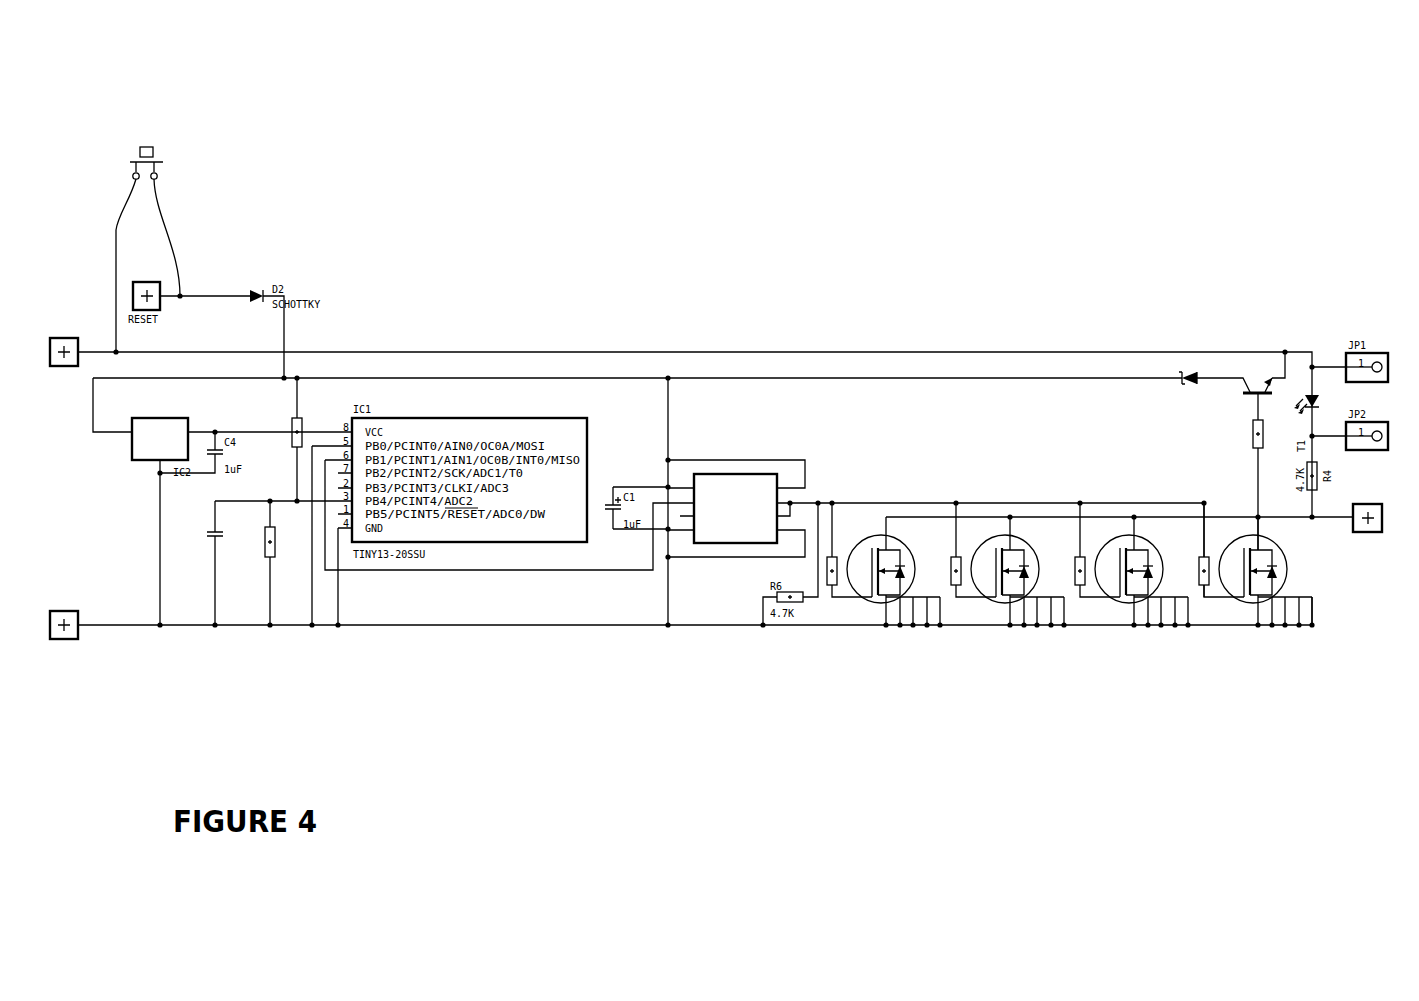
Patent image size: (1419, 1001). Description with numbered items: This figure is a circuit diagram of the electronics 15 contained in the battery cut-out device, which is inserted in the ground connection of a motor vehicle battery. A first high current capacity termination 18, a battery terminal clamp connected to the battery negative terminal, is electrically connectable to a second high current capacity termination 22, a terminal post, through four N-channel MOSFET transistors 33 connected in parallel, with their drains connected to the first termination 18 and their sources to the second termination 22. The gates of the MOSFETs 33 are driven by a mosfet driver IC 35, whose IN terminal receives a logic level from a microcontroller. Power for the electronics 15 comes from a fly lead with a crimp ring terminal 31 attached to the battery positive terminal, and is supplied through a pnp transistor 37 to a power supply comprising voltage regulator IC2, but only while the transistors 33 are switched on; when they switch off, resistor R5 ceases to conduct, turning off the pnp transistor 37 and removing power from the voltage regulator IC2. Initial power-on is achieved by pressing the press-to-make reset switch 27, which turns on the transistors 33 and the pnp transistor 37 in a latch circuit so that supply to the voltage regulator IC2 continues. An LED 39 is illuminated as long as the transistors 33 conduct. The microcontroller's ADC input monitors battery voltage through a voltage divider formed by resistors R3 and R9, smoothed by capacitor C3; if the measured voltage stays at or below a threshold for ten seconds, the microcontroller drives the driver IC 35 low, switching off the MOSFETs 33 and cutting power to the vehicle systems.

The electronics 15 is at (940, 164).
The first high current capacity termination 18 is at (58, 639).
The second high current capacity termination 22 is at (1365, 532).
The press-to-make momentary push button switch 27 is at (195, 162).
The crimp ring terminal 31 is at (63, 337).
The N-channel MOSFET transistors 33 is at (866, 678).
The mosfet driver IC 35 is at (763, 474).
The pnp transistor 37 is at (1258, 375).
The LED 39 is at (1320, 385).
The voltage regulator IC2 is at (135, 458).
The capacitor C3 is at (205, 543).
The resistor R3 is at (290, 423).
The resistor R5 is at (1238, 435).
The resistor R9 is at (265, 567).